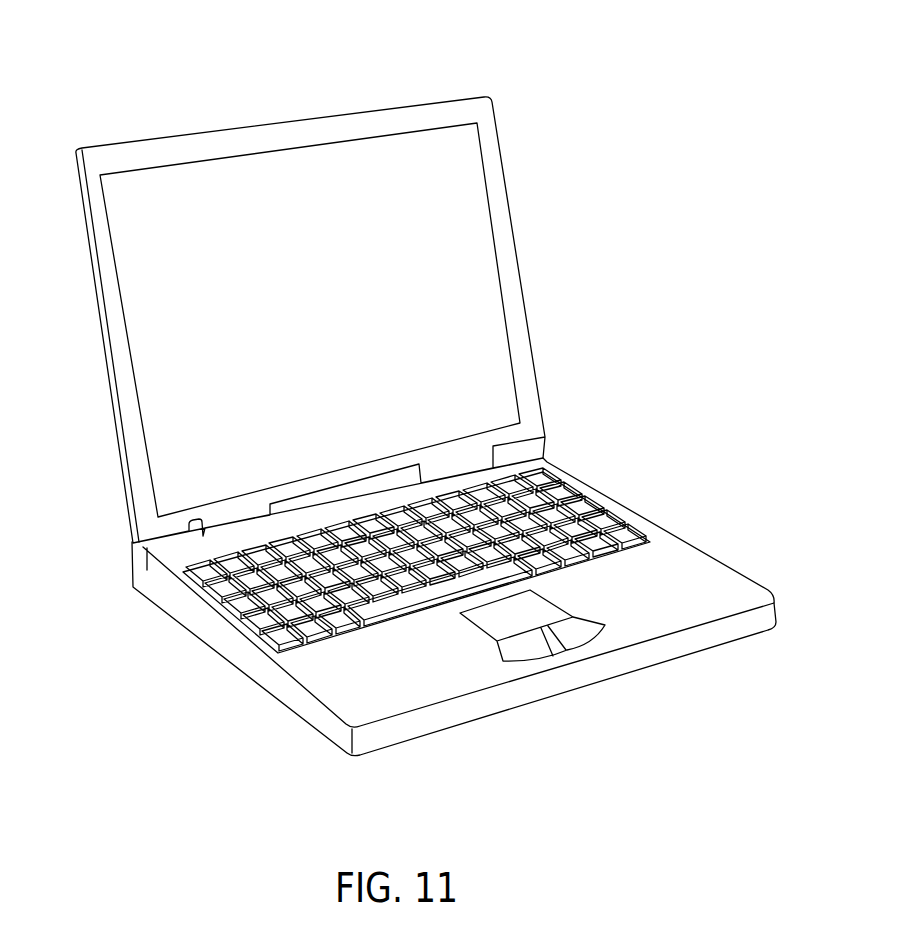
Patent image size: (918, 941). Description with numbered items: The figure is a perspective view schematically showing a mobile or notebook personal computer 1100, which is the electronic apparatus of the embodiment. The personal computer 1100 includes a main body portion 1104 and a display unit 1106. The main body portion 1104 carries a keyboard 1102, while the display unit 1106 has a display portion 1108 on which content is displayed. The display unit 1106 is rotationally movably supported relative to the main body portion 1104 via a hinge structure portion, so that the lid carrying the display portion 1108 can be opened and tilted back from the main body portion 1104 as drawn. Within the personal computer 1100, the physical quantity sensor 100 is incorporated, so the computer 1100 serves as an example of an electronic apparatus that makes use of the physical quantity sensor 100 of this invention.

The personal computer 1100 is at (426, 419).
The display unit 1106 is at (517, 242).
The display portion 1108 is at (302, 173).
The main body portion 1104 is at (437, 685).
The physical quantity sensor 100 is at (685, 583).
The keyboard 1102 is at (597, 503).